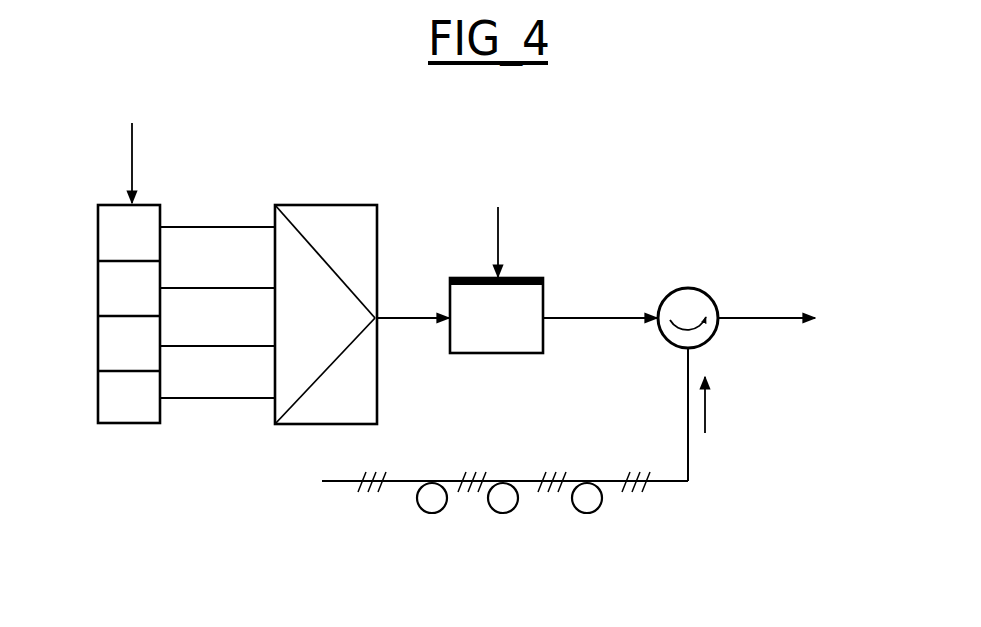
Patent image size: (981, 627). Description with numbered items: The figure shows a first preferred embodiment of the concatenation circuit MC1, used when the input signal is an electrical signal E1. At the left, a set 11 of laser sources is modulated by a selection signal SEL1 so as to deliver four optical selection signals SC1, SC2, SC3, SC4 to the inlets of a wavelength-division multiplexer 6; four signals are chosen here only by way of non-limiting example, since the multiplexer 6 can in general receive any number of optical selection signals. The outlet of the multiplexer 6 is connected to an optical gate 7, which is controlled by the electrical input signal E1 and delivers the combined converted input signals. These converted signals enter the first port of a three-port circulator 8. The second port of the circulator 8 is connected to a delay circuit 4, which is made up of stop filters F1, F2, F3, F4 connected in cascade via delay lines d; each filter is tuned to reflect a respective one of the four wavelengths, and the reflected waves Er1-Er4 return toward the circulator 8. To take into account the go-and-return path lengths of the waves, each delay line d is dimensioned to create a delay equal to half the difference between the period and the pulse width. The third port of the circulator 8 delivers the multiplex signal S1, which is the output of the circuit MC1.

The delay circuit 4 is at (448, 477).
The wavelength-division multiplexer 6 is at (348, 204).
The optical gate 7 is at (528, 354).
The optical circulator 8 is at (707, 290).
The set of laser sources 11 is at (127, 424).
The selection signal SEL1 is at (130, 149).
The optical selection signal SC1 is at (215, 227).
The optical selection signal SC2 is at (233, 288).
The optical selection signal SC3 is at (233, 346).
The optical selection signal SC4 is at (233, 398).
The electrical input signal E1 is at (495, 226).
The multiplex signal S1 is at (768, 300).
The concatenation circuit MC1 is at (622, 166).
The received signals Er1-Er4 is at (754, 405).
The filter F1 is at (640, 500).
The filter F2 is at (553, 493).
The filter F3 is at (470, 492).
The filter F4 is at (372, 488).
The delay line d is at (433, 513).